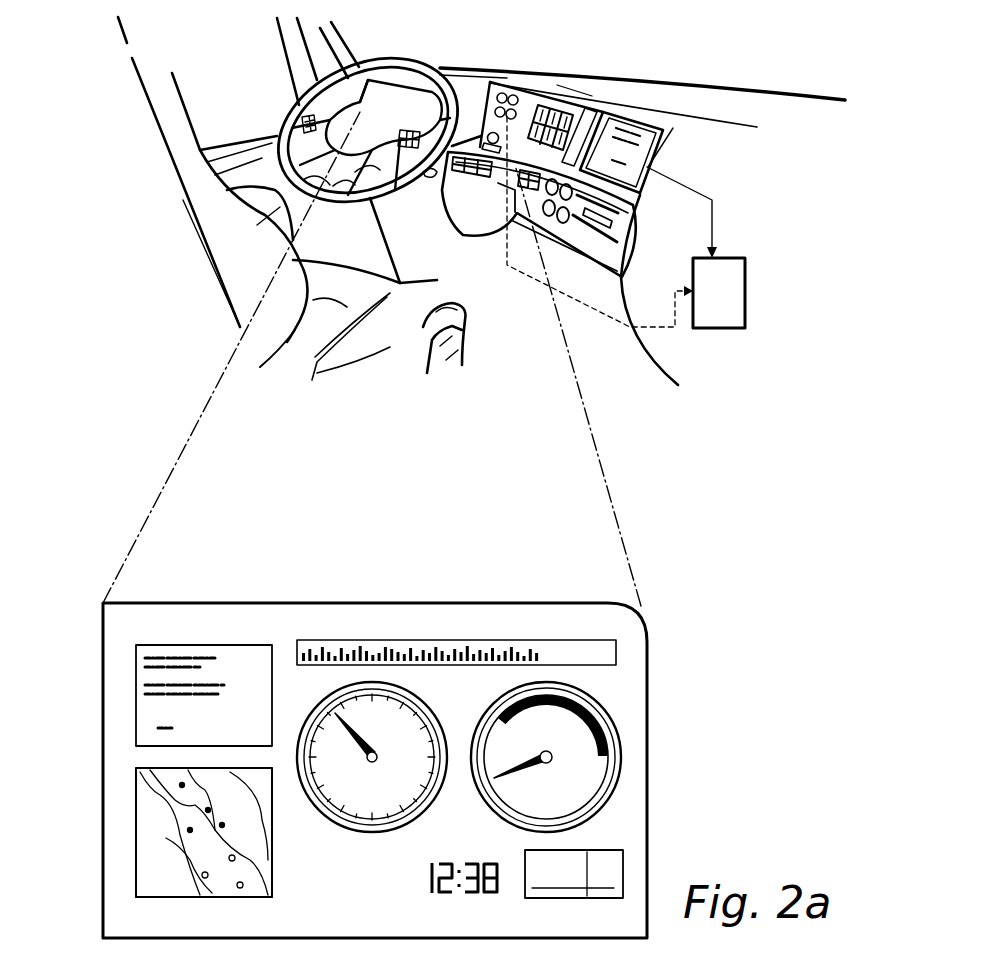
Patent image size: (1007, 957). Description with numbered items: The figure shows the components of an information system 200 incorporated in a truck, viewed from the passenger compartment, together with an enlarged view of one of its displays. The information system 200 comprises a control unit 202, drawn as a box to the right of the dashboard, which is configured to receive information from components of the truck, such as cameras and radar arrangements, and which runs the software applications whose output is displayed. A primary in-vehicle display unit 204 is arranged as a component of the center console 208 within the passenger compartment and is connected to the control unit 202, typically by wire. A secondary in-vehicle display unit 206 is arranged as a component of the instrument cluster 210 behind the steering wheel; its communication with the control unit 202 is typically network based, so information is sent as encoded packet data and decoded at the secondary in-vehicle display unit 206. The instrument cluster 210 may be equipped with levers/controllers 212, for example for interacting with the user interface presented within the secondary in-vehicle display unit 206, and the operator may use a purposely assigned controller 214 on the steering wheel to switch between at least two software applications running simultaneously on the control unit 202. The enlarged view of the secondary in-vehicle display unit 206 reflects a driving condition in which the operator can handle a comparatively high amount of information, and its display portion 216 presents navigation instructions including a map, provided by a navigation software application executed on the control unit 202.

The information system 200 is at (771, 370).
The control unit 202 is at (746, 277).
The primary in-vehicle display unit 204 is at (630, 129).
The secondary in-vehicle display unit 206 is at (468, 100).
The center console 208 is at (605, 285).
The instrument cluster 210 is at (490, 48).
The levers/controllers 212 is at (547, 106).
The purposely assigned controller 214 is at (397, 150).
The display portion 216 is at (136, 840).